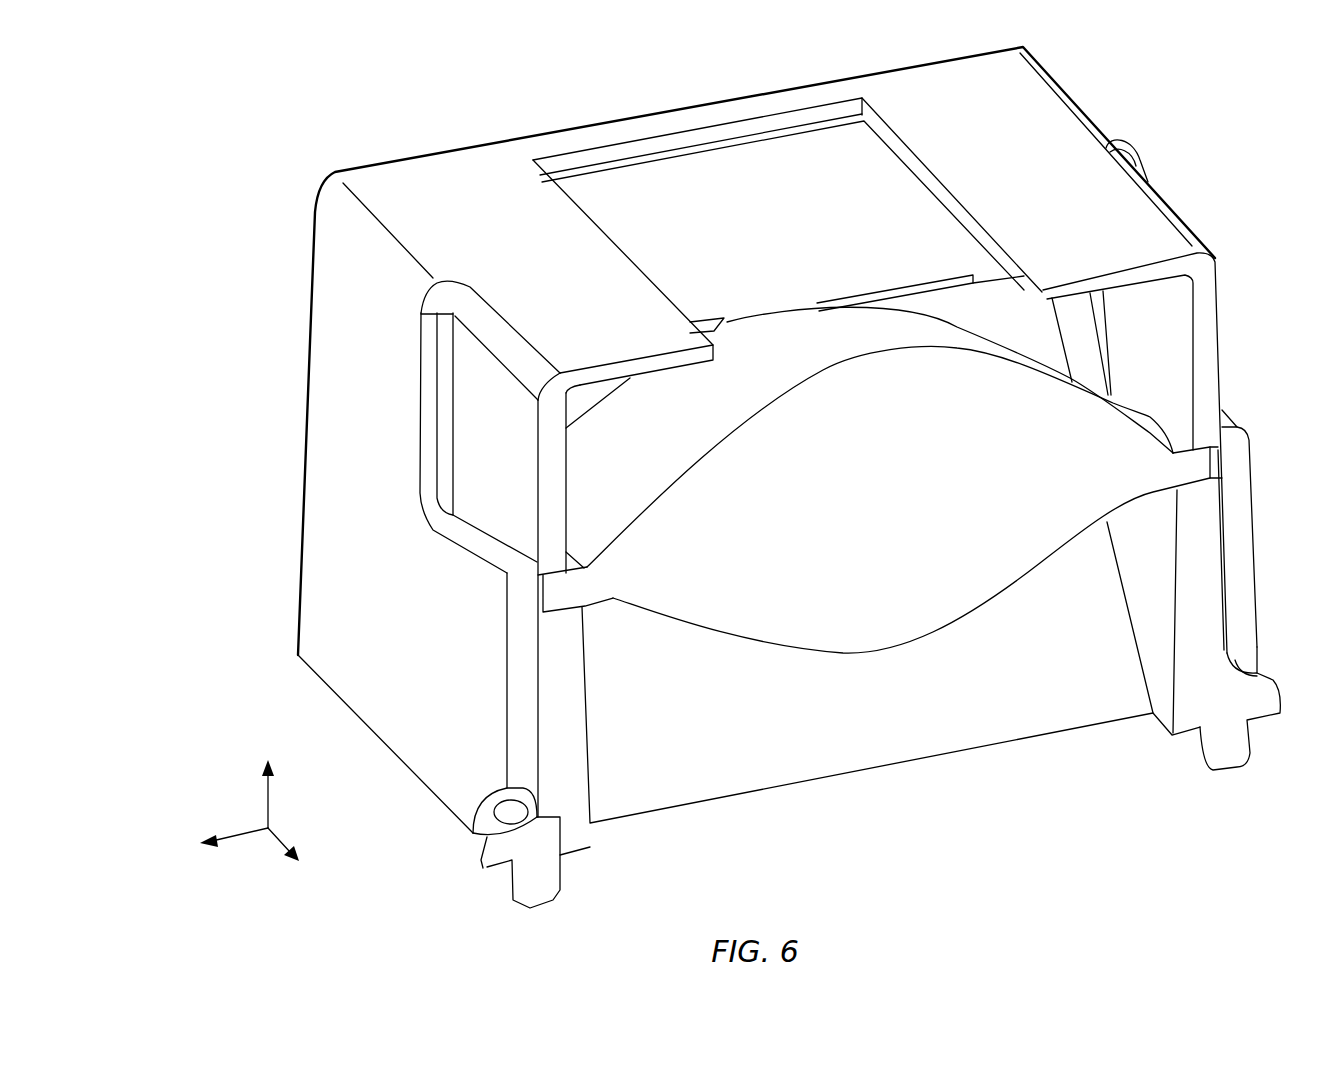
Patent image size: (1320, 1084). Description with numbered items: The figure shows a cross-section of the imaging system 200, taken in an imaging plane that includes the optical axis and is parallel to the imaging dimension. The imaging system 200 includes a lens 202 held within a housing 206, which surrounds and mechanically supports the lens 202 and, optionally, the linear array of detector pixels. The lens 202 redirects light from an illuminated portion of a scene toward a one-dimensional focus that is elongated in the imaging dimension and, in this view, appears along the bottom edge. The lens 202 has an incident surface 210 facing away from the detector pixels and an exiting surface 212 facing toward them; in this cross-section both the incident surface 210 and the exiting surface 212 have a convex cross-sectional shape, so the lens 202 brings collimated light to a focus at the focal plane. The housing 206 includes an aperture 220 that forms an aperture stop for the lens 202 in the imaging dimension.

The imaging system 200 is at (186, 131).
The lens 202 is at (885, 488).
The housing 206 is at (477, 243).
The incident surface 210 is at (740, 366).
The exiting surface 212 is at (751, 644).
The aperture 220 is at (614, 178).